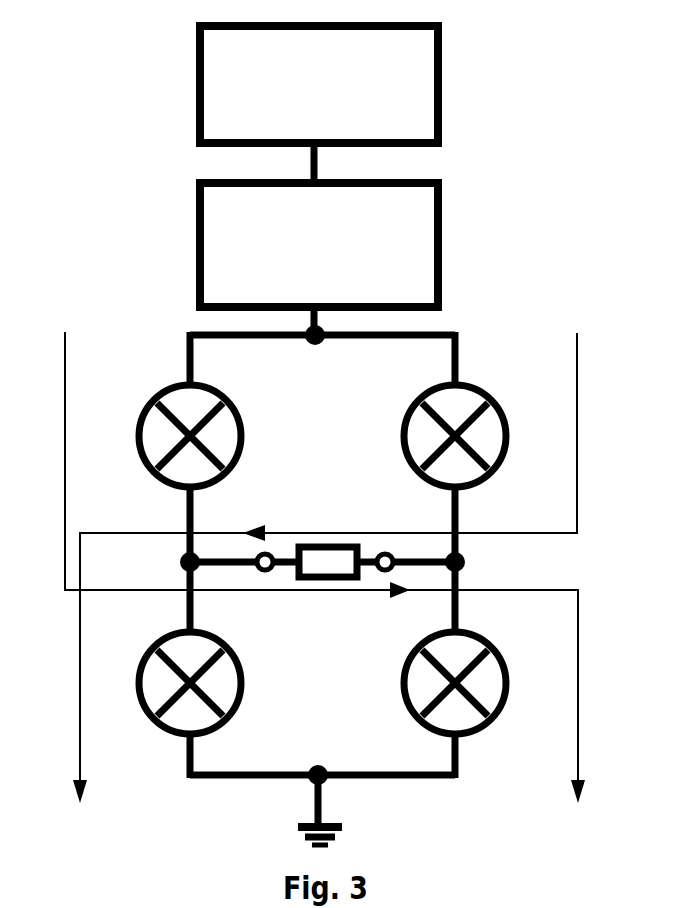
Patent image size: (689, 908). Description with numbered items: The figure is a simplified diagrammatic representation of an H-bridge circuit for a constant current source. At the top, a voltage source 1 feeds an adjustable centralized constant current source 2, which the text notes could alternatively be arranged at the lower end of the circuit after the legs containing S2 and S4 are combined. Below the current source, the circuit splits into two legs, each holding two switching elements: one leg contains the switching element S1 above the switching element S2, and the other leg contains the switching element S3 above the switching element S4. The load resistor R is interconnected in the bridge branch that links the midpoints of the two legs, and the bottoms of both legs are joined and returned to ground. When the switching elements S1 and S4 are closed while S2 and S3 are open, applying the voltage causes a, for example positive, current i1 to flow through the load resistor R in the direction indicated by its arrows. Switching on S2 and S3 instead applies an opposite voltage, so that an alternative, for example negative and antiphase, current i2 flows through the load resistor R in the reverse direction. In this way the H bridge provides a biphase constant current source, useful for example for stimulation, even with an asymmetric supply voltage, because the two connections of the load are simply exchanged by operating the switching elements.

The voltage source 1 is at (236, 84).
The adjustable centralized constant current source 2 is at (241, 245).
The switching element S1 is at (163, 436).
The switching element S2 is at (175, 691).
The switching element S3 is at (482, 436).
The switching element S4 is at (468, 693).
The load resistor R is at (322, 540).
The current i1 is at (319, 545).
The current i2 is at (330, 546).